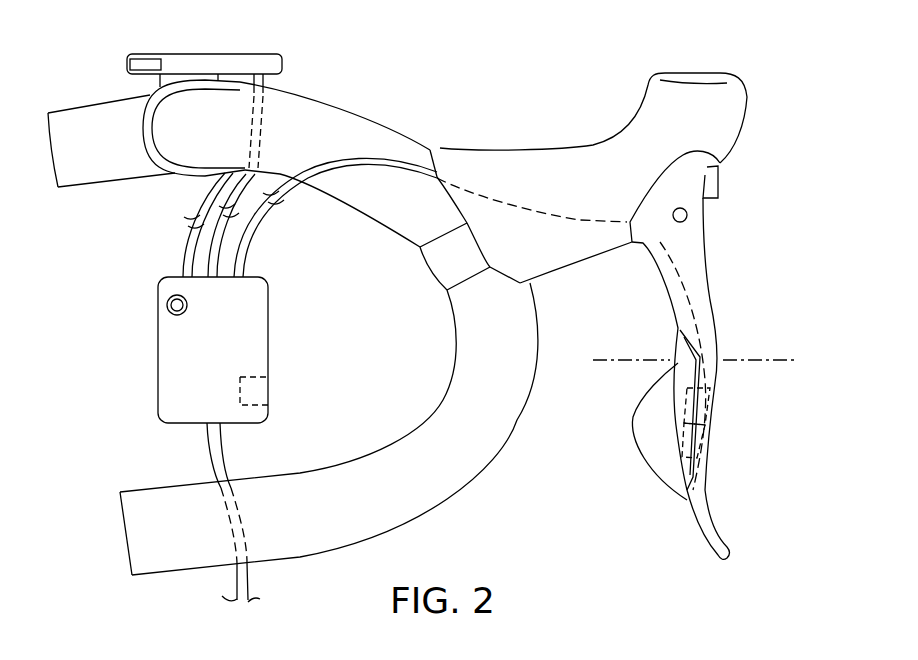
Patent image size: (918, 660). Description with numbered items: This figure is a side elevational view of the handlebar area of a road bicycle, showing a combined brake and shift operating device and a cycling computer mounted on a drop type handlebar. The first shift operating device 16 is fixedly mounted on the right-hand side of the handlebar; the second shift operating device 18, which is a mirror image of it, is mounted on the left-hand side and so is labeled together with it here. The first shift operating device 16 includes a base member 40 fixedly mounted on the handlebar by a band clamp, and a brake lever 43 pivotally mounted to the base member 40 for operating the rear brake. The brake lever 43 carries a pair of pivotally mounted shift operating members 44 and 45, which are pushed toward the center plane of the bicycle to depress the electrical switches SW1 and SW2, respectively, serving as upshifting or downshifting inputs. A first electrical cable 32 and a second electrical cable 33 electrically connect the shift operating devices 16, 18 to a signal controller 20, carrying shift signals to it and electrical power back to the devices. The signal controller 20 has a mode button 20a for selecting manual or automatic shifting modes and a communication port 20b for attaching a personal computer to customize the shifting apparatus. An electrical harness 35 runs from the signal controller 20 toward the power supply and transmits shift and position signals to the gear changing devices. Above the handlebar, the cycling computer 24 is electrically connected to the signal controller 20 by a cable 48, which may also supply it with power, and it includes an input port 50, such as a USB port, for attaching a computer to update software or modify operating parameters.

The first shift operating device 16 is at (703, 297).
The second shift operating device 18 is at (688, 157).
The signal controller 20 is at (207, 350).
The mode button 20a is at (166, 302).
The communication port 20b is at (248, 377).
The cycling computer 24 is at (183, 60).
The first electrical cable 32 is at (262, 218).
The second electrical cable 33 is at (183, 242).
The electrical harness 35 is at (205, 455).
The base member 40 is at (490, 150).
The brake lever 43 is at (710, 303).
The shift operating member 44 is at (657, 450).
The shift operating member 45 is at (690, 352).
The cable 48 is at (218, 247).
The input port 50 is at (127, 64).
The electrical switch SW1 is at (705, 448).
The electrical switch SW2 is at (708, 402).